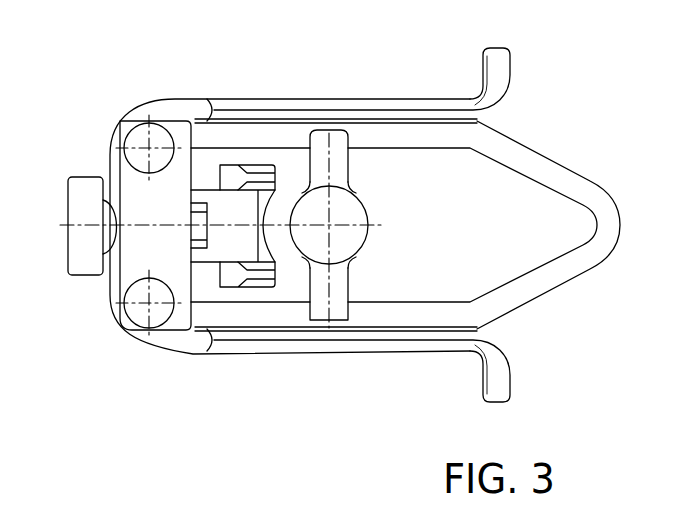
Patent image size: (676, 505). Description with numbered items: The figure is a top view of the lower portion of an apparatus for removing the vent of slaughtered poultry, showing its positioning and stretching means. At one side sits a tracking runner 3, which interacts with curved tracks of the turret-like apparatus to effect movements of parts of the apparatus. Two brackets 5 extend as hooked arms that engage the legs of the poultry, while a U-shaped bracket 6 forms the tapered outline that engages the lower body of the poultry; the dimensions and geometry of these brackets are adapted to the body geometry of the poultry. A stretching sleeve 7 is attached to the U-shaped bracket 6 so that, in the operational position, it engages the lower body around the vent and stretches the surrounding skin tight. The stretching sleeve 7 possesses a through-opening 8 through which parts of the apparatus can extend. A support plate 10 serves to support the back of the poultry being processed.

The tracking runner 3 is at (80, 190).
The brackets 5 is at (410, 102).
The U-shaped bracket 6 is at (555, 272).
The stretching sleeve 7 is at (362, 253).
The through-opening 8 is at (342, 214).
The support plate 10 is at (264, 180).